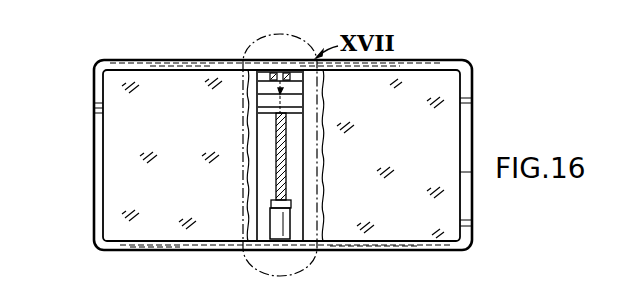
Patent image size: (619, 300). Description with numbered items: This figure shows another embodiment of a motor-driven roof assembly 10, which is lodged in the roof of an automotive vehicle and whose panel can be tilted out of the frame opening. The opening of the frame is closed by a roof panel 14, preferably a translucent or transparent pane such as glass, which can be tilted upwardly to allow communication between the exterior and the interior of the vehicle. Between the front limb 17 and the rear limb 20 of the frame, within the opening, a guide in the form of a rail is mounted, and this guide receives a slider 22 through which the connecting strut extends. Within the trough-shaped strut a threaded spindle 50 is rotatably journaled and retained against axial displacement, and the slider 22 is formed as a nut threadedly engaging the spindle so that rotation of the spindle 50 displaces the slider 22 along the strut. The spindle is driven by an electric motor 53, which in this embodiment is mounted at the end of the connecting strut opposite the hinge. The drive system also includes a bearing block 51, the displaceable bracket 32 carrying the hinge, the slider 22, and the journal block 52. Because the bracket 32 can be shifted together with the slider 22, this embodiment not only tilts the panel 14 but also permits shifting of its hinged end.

The assembly 10 is at (474, 123).
The roof panel 14 is at (427, 159).
The front limb 17 is at (173, 66).
The rear limb 20 is at (154, 247).
The slider 22 is at (259, 109).
The bracket 32 is at (303, 91).
The threaded spindle 50 is at (286, 162).
The bearing block 51 is at (274, 72).
The journal block 52 is at (291, 205).
The electric motor 53 is at (270, 222).